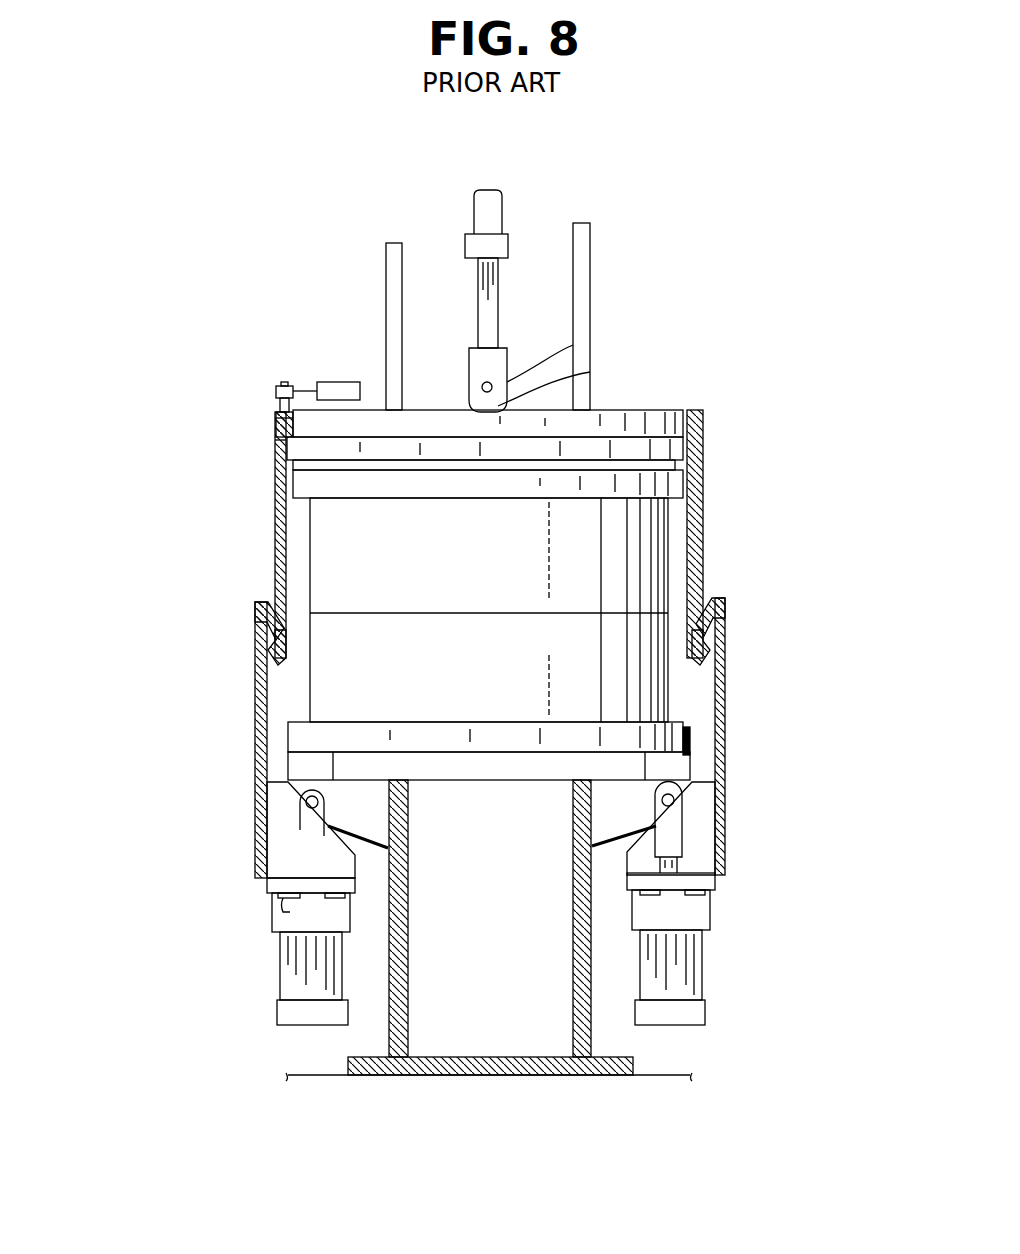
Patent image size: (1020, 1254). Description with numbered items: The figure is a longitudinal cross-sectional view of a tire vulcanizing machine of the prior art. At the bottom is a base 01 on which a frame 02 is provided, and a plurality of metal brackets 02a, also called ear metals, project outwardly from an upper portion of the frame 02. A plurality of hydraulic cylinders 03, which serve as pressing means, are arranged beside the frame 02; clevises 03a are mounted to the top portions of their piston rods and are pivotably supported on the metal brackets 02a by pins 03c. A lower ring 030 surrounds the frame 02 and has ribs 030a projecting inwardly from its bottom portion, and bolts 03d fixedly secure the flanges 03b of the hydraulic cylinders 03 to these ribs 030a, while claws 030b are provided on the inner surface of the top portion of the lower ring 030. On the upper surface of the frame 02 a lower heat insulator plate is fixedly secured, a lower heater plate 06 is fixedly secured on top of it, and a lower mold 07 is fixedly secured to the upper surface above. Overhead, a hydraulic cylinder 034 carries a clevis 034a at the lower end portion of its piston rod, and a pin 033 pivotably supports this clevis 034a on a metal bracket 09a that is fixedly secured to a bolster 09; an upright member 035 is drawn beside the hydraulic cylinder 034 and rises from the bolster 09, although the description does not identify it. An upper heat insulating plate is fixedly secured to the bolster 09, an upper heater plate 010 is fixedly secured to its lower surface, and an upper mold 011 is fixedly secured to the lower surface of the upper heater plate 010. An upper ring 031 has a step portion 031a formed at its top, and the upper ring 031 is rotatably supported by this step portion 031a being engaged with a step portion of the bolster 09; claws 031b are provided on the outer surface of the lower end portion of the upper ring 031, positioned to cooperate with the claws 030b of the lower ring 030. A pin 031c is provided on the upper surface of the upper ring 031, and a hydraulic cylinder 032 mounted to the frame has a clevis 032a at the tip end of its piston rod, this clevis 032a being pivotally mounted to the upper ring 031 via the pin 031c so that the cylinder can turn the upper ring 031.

The base 01 is at (495, 1065).
The frame 02 is at (398, 1000).
The metal brackets 02a is at (600, 822).
The hydraulic cylinders 03 is at (295, 987).
The clevises 03a is at (718, 866).
The flanges 03b is at (280, 884).
The pins 03c is at (680, 806).
The bolts 03d is at (278, 912).
The lower heater plate 06 is at (720, 770).
The lower mold 07 is at (720, 678).
The bolster 09 is at (700, 450).
The metal bracket 09a is at (590, 372).
The upper heater plate 010 is at (700, 490).
The upper mold 011 is at (680, 570).
The lower ring 030 is at (262, 705).
The ribs 030a is at (278, 823).
The claws 030b is at (258, 620).
The upper ring 031 is at (278, 520).
The step portion 031a is at (278, 432).
The claws 031b is at (283, 652).
The pin 031c is at (280, 404).
The hydraulic cylinder 032 is at (337, 387).
The clevis 032a is at (276, 392).
The pin 033 is at (573, 345).
The hydraulic cylinder 034 is at (480, 212).
The clevis 034a is at (477, 360).
The guide bar 035 is at (583, 238).